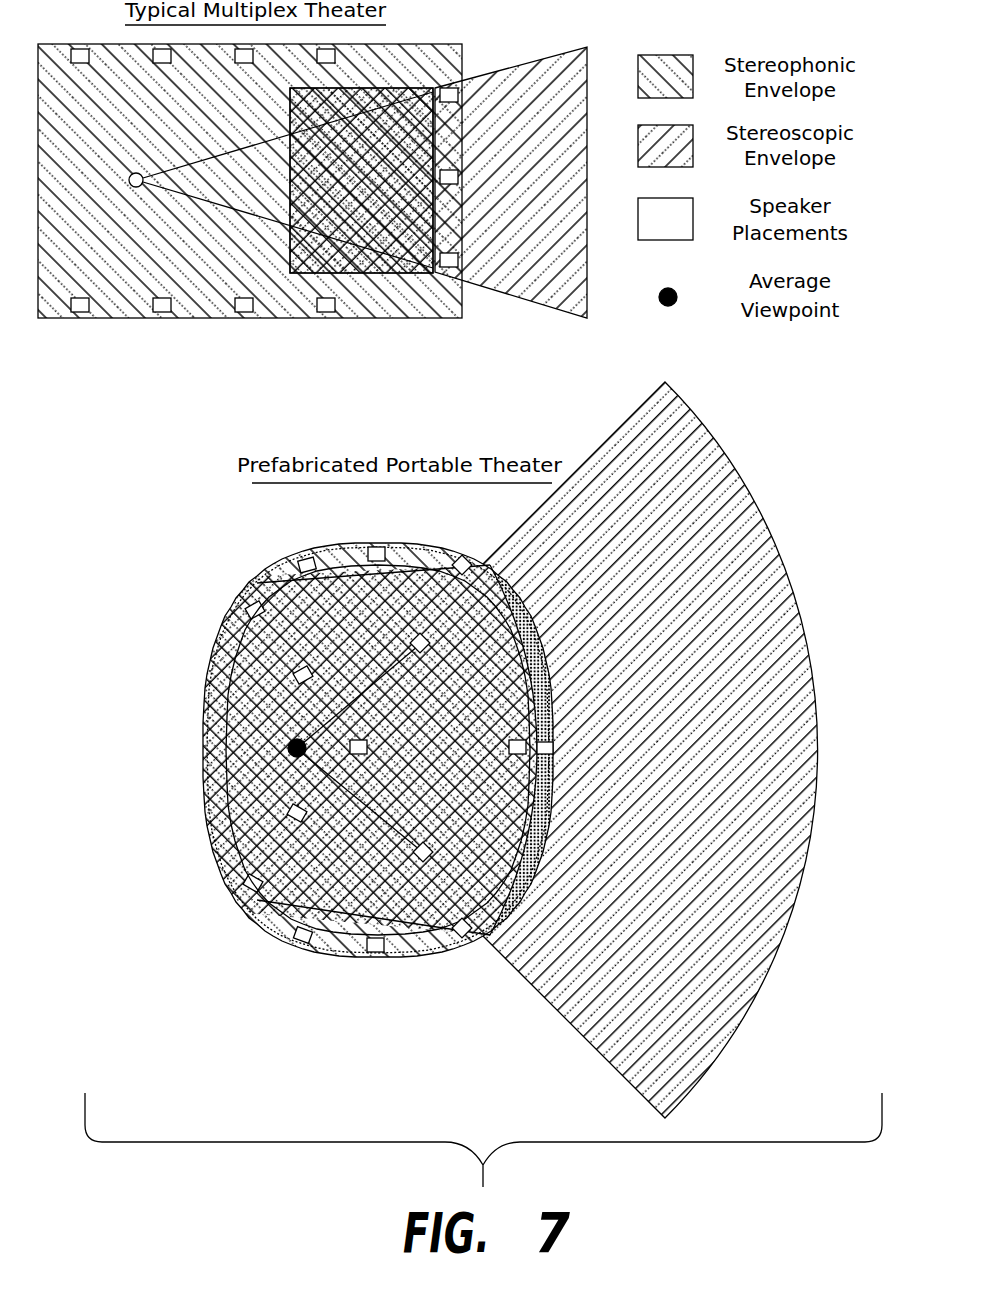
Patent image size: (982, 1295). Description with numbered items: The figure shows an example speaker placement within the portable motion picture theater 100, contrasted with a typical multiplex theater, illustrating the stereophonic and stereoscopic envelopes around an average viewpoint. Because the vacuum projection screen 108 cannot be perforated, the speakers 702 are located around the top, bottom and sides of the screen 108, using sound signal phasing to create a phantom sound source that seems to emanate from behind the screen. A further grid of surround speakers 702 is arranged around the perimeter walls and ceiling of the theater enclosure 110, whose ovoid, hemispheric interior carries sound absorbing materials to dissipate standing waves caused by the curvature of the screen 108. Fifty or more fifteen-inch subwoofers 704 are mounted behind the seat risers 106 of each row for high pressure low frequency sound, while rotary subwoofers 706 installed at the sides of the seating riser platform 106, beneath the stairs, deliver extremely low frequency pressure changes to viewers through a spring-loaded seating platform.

The portable motion picture theater 100 is at (480, 750).
The audience seats 106 is at (208, 688).
The projection screen 108 is at (537, 982).
The theater enclosure 110 is at (198, 725).
The speakers 702 is at (504, 751).
The subwoofers 704 is at (245, 600).
The rotary subwoofers 706 is at (225, 647).